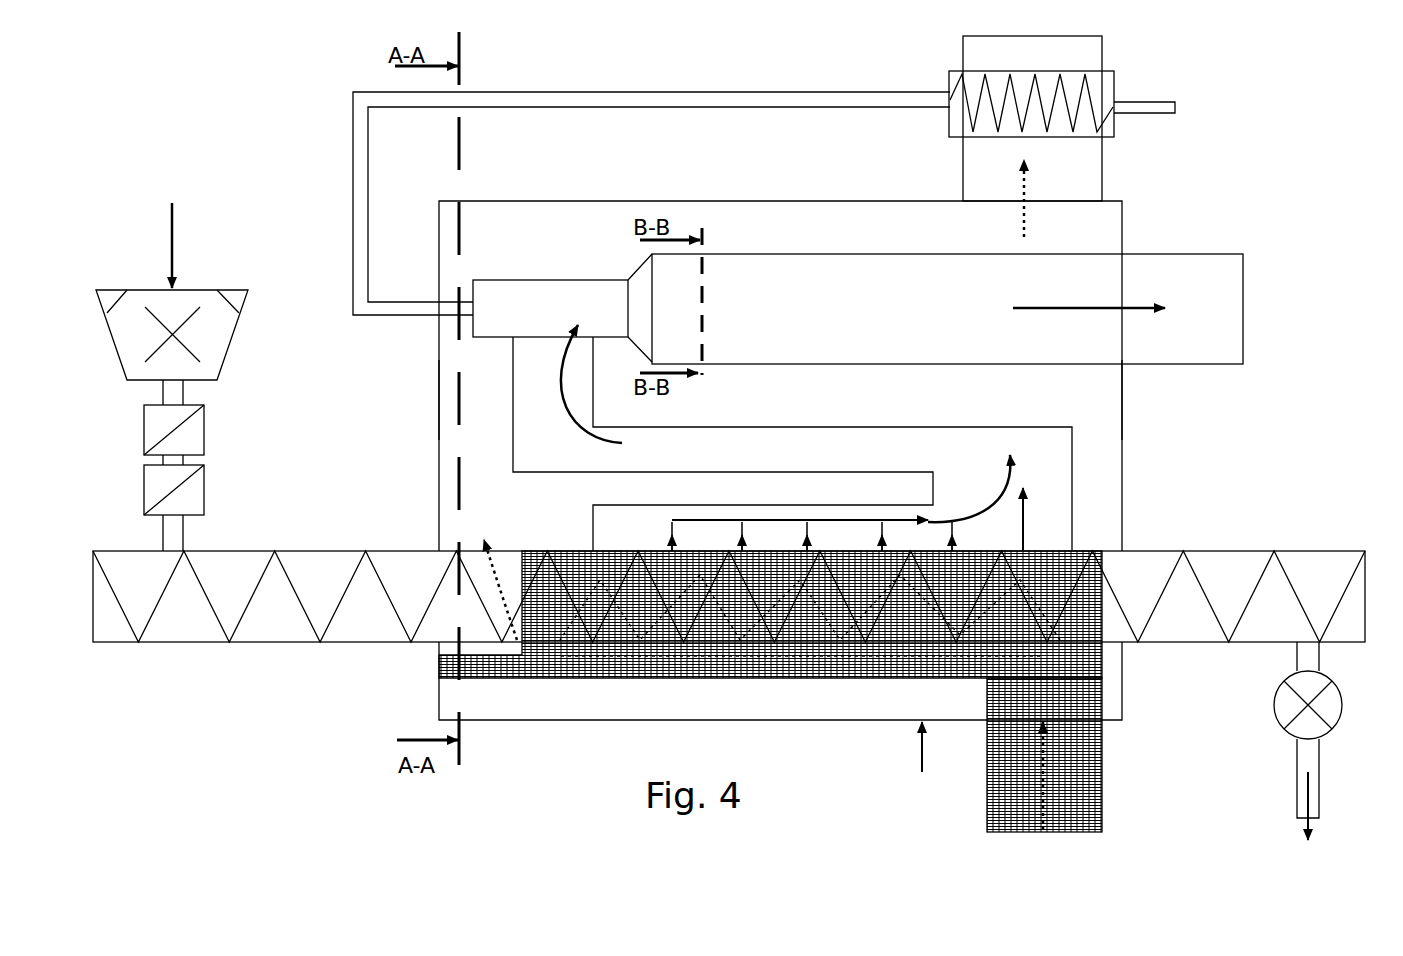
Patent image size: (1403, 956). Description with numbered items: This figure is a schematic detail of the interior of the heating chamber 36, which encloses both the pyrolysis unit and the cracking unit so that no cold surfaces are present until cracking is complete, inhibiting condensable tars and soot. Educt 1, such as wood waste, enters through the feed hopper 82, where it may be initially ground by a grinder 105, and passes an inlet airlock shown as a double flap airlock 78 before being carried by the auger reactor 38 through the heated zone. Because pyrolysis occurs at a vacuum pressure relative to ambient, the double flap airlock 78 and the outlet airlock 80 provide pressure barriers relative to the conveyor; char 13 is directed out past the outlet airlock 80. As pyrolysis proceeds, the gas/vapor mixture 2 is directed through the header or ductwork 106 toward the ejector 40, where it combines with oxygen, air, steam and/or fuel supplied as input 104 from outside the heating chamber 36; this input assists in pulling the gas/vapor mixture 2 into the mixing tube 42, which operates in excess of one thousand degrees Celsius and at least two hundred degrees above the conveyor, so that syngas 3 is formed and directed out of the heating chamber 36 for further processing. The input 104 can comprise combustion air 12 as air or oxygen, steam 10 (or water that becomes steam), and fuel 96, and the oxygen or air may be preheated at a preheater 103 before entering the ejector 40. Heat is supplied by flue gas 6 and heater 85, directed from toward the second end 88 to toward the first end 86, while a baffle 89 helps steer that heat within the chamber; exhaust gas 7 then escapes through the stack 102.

The educt 1 is at (170, 234).
The gas/vapor mixture 2 is at (847, 494).
The syngas 3 is at (1099, 310).
The flue gas 6 is at (1044, 770).
The exhaust gas 7 is at (1024, 186).
The steam 10 is at (1230, 108).
The combustion air 12 is at (1230, 108).
The char 13 is at (1306, 819).
The heating chamber 36 is at (755, 201).
The auger reactor 38 is at (290, 642).
The ejector 40 is at (510, 297).
The mixing tube 42 is at (833, 277).
The double flap airlock 78 is at (148, 483).
The outlet airlock 80 is at (1335, 725).
The feed hopper 82 is at (128, 290).
The heater 85 is at (921, 760).
The first end 86 is at (430, 398).
The second end 88 is at (1137, 403).
The baffle 89 is at (792, 678).
The fuel 96 is at (1187, 107).
The stack 102 is at (1097, 60).
The preheater 103 is at (960, 72).
The input 104 is at (660, 92).
The grinder 105 is at (178, 338).
The ductwork 106 is at (722, 427).